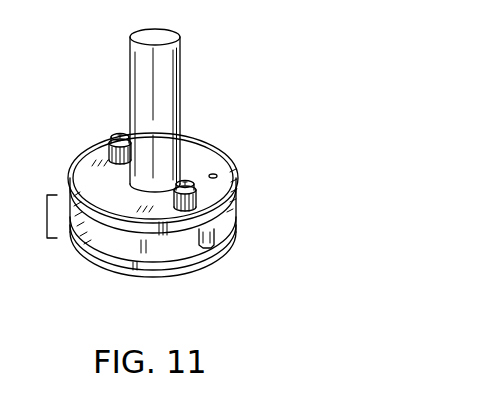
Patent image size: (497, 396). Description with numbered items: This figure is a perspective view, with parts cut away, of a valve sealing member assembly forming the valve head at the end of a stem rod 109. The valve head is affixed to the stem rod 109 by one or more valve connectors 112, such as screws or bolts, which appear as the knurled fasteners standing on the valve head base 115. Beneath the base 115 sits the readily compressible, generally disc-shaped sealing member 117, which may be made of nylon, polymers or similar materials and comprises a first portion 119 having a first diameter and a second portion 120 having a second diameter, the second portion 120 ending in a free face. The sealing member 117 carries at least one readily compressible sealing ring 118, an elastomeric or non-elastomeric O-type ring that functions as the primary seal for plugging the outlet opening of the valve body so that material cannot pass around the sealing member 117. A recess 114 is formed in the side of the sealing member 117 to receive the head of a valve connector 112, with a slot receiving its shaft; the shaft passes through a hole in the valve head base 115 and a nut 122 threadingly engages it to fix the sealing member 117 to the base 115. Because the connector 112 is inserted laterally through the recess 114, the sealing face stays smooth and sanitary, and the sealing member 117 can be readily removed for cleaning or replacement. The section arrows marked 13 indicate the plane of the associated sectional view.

The stem rod 109 is at (181, 66).
The valve connector 112 is at (188, 182).
The nut 122 is at (212, 173).
The valve head base 115 is at (236, 195).
The first portion 119 is at (228, 212).
The sealing ring 118 is at (232, 240).
The recess 114 is at (222, 247).
The sealing member 117 is at (124, 208).
The second portion 120 is at (210, 262).
The section line 13- 13 is at (85, 138).